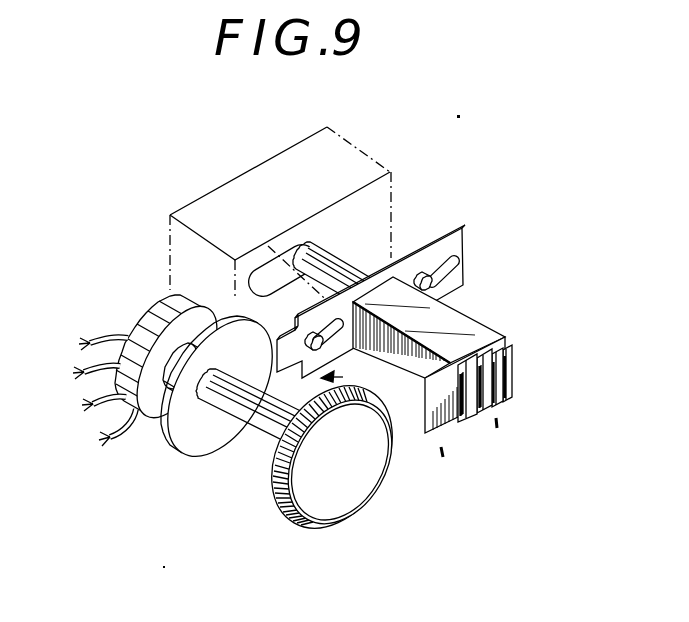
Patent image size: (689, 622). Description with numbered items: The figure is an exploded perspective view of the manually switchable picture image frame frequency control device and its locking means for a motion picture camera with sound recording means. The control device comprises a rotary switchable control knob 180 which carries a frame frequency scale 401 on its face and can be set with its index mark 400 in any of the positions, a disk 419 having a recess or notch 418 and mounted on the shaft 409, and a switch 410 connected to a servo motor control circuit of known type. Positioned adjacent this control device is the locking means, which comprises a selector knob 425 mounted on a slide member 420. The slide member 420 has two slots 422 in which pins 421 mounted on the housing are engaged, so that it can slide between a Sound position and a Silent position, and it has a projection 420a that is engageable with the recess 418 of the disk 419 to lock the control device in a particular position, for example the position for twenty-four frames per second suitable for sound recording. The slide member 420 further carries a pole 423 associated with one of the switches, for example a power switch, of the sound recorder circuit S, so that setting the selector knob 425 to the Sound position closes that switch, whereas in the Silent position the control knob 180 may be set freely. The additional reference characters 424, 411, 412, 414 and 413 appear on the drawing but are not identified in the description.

The sound recorder circuit S is at (322, 160).
The projection 420a is at (290, 350).
The pole 423 is at (338, 262).
The slide member 420 is at (398, 281).
The slots 422 is at (456, 262).
The pins 421 is at (436, 289).
The switch block 424 is at (459, 355).
The selector knob 425 is at (511, 364).
The switch 410 is at (133, 350).
The lead wires 411 is at (92, 399).
The disk 419 is at (184, 441).
The shaft 409 is at (239, 416).
The recess 418 is at (285, 436).
The frame frequency scale 401 is at (325, 467).
The control knob 180 is at (335, 500).
The index mark 400 is at (347, 376).
The index mark 412 is at (433, 442).
The SOUND indication 414 is at (433, 552).
The SILENT indication 413 is at (505, 484).